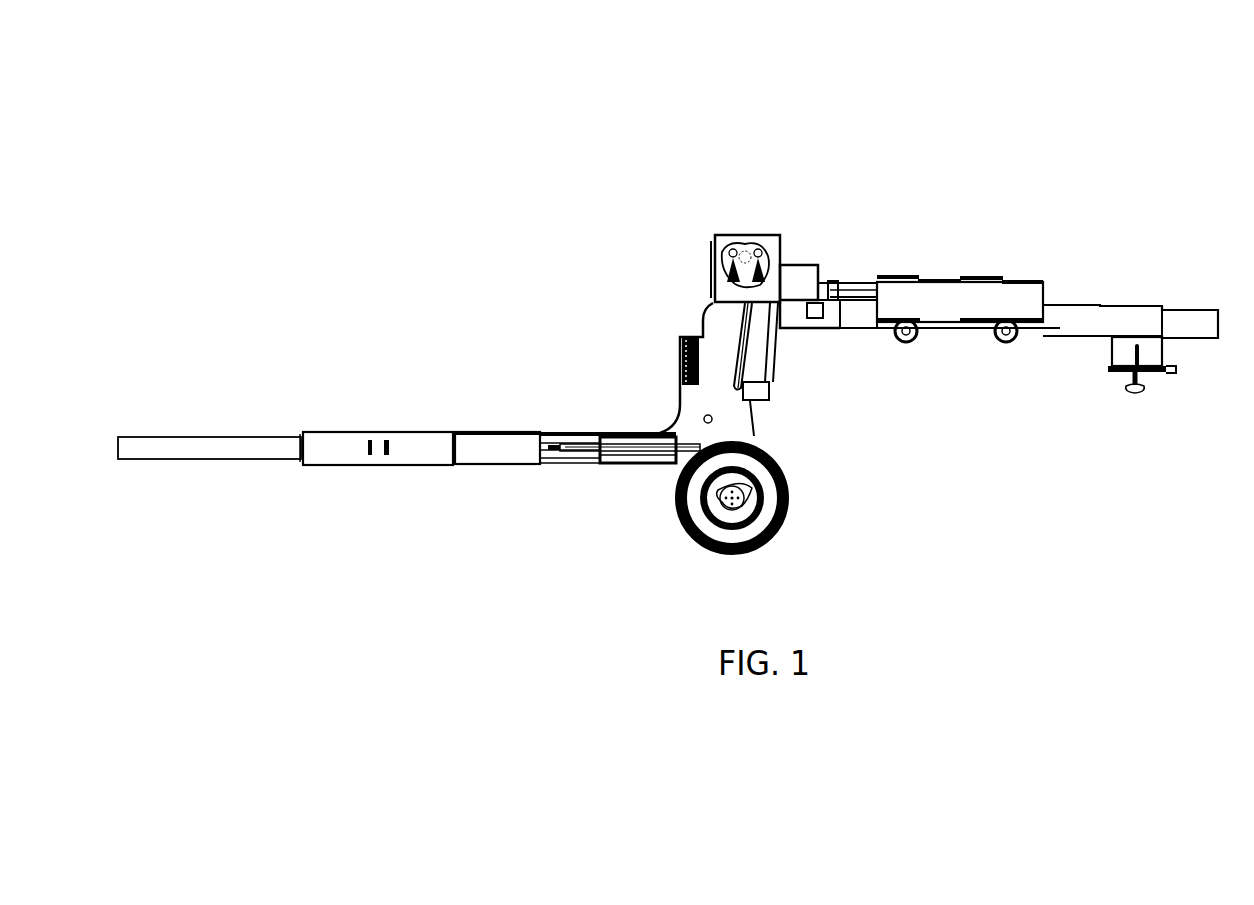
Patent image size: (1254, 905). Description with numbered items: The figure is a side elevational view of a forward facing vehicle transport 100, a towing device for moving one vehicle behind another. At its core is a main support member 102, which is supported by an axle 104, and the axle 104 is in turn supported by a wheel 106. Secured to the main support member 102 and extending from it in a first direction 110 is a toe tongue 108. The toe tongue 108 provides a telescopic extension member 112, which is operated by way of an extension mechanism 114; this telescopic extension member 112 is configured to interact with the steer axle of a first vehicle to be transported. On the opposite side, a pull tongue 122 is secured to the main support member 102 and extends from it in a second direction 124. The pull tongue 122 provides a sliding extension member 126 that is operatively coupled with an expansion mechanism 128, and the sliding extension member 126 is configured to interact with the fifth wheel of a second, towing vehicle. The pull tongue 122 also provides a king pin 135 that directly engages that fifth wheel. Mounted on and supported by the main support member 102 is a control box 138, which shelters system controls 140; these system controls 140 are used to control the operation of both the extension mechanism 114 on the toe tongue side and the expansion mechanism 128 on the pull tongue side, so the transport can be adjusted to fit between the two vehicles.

The forward facing vehicle transport 100 is at (911, 104).
The main support member 102 is at (717, 324).
The axle 104 is at (700, 479).
The wheel 106 is at (765, 446).
The toe tongue 108 is at (388, 400).
The first direction 110 is at (562, 383).
The telescopic extension member 112 is at (462, 414).
The extension mechanism 114 is at (567, 452).
The pull tongue 122 is at (1121, 262).
The second direction 124 is at (946, 447).
The sliding extension member 126 is at (1090, 325).
The expansion mechanism 128 is at (858, 280).
The king pin 135 is at (1137, 404).
The control box 138 is at (750, 218).
The system controls 140 is at (784, 247).